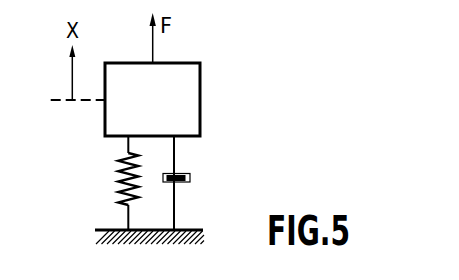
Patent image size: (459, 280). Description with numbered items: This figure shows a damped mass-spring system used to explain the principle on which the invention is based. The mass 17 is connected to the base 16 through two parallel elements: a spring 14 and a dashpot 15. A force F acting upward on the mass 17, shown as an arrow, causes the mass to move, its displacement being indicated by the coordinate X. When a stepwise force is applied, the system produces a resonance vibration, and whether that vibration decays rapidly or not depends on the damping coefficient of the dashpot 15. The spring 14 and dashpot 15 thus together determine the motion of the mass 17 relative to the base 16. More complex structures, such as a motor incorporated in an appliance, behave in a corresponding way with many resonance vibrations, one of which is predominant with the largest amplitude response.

The spring 14 is at (120, 181).
The dashpot 15 is at (190, 178).
The base 16 is at (190, 229).
The mass 17 is at (201, 89).